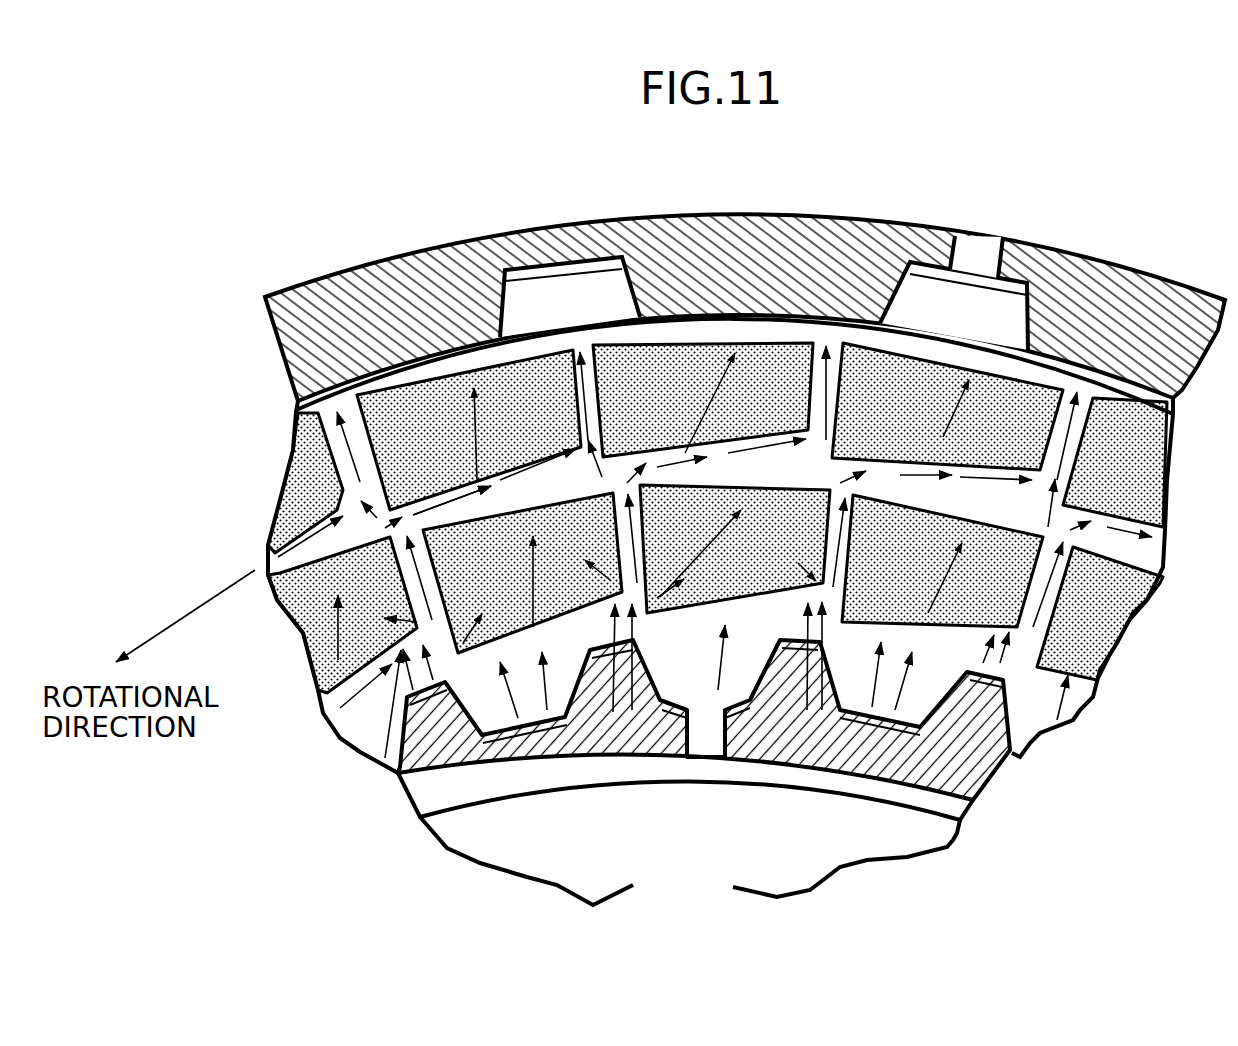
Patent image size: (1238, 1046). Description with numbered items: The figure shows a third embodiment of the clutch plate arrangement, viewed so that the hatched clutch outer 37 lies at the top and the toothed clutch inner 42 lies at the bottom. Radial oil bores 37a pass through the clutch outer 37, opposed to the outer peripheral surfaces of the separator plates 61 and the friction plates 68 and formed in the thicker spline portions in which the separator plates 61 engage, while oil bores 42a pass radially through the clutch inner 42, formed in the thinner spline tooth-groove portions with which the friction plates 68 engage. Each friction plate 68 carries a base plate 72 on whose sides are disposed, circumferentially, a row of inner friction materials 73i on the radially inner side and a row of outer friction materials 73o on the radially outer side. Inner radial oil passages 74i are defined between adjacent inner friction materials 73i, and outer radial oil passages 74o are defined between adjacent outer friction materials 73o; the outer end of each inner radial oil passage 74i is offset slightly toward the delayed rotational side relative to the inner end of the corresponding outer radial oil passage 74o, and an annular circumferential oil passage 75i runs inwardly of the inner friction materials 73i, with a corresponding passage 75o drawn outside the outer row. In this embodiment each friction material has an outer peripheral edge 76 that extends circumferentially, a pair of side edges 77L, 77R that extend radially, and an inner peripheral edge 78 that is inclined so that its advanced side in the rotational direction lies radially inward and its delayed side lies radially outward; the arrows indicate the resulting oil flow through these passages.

The clutch outer 37 is at (745, 441).
The oil bores 37a is at (966, 236).
The clutch inner 42 is at (704, 772).
The oil bores 42a is at (690, 742).
The separator plates 61 is at (570, 288).
The friction plates 68 is at (540, 330).
The base plate 72 is at (922, 348).
The outer friction materials 73o is at (428, 459).
The inner friction materials 73i is at (483, 592).
The outer radial oil passages 74o is at (577, 389).
The inner radial oil passages 74i is at (622, 536).
The outer flow arrow 75o is at (497, 483).
The annular circumferential oil passage 75i is at (538, 633).
The outer peripheral edge 76 is at (715, 340).
The side edge 77L is at (595, 408).
The side edge 77R is at (820, 392).
The inner peripheral edge 78 is at (685, 463).